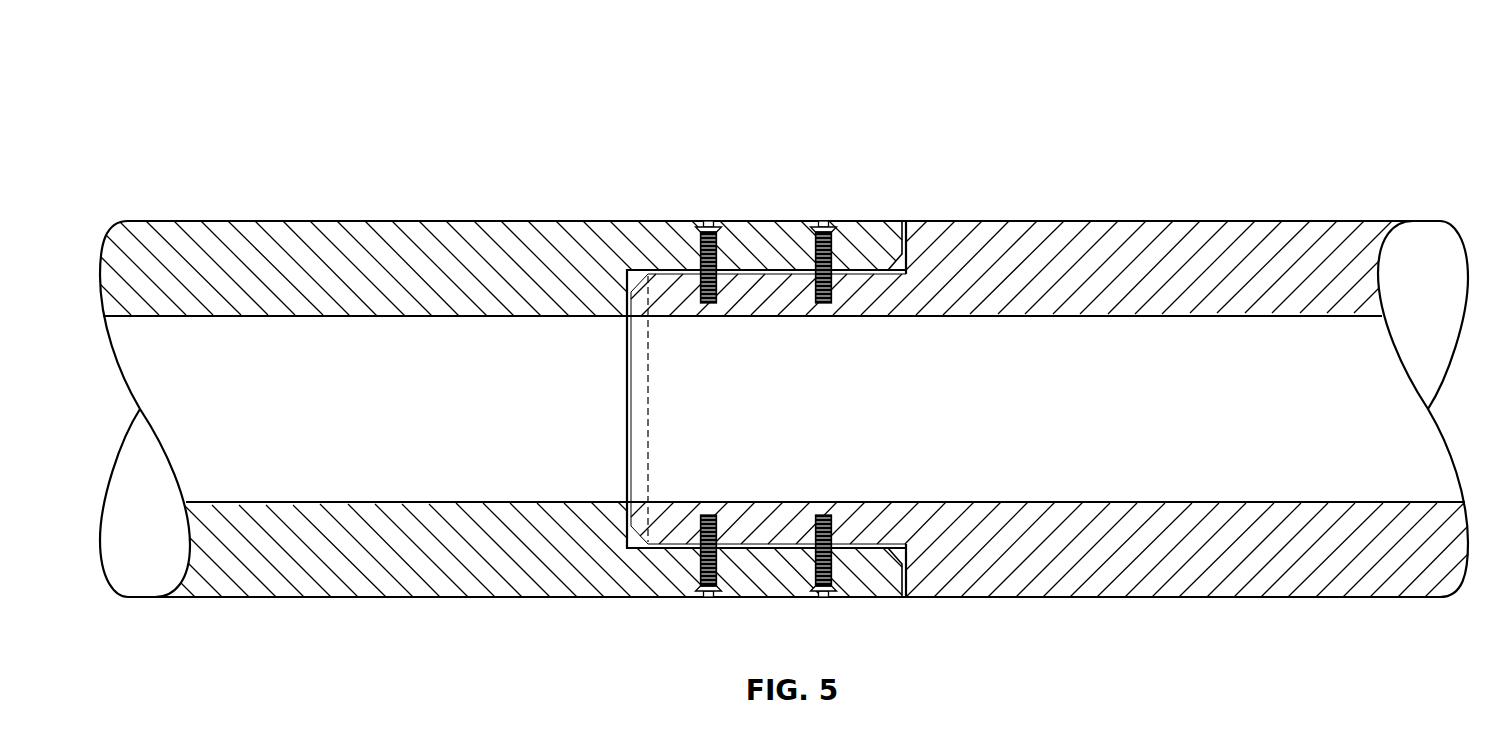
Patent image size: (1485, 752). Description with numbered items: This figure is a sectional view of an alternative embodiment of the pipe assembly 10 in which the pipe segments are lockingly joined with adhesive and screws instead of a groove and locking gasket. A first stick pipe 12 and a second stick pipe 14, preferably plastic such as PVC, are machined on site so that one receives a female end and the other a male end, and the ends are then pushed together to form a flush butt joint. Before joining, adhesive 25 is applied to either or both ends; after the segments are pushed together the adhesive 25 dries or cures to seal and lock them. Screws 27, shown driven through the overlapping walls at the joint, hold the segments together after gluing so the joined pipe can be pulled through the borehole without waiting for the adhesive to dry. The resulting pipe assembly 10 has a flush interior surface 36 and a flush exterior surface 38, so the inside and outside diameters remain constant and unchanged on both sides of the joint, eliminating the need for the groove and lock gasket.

The pipe assembly 10 is at (209, 80).
The first stick pipe 12 is at (458, 221).
The second stick pipe 14 is at (1068, 221).
The adhesive 25 is at (722, 273).
The screws 27 is at (713, 221).
The interior surface 36 is at (437, 317).
The exterior surface 38 is at (270, 221).